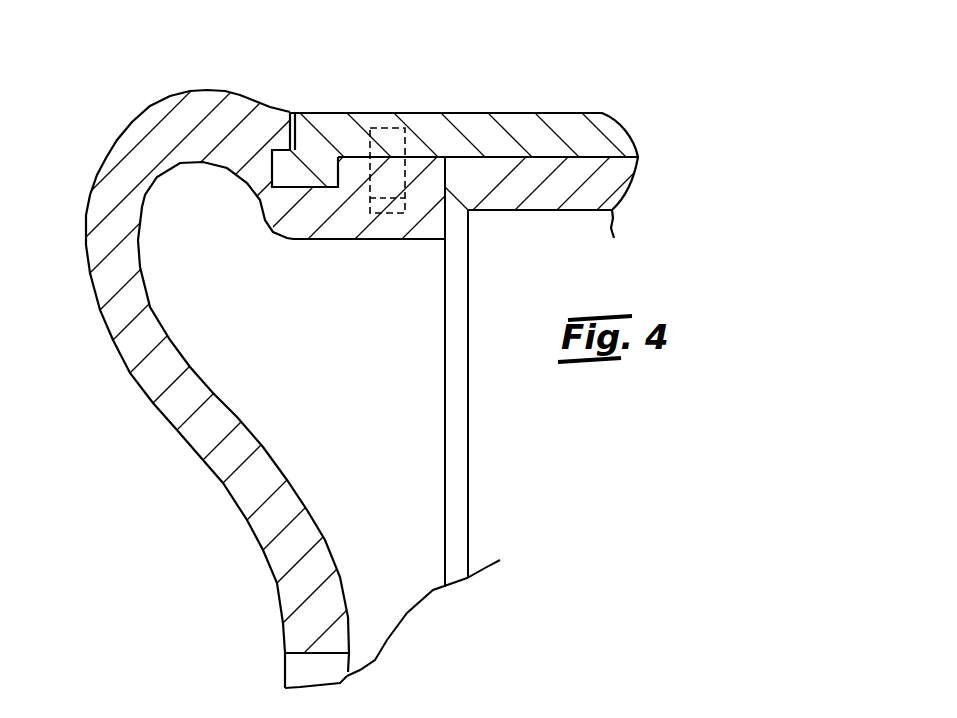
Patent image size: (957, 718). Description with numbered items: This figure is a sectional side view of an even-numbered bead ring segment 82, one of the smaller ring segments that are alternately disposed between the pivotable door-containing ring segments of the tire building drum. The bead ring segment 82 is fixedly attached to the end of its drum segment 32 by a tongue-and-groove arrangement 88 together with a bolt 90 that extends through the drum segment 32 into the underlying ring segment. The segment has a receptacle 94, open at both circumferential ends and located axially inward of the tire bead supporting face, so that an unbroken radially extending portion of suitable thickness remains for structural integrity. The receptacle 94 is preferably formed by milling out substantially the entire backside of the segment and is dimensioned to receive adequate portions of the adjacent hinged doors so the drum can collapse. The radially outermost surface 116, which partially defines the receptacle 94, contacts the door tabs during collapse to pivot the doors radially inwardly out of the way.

The drum segment 32 is at (513, 112).
The bead ring segment 82 is at (126, 177).
The tongue-and-groove arrangement 88 is at (279, 140).
The bolt 90 is at (388, 112).
The receptacle 94 is at (282, 323).
The radially outermost surface 116 is at (380, 241).